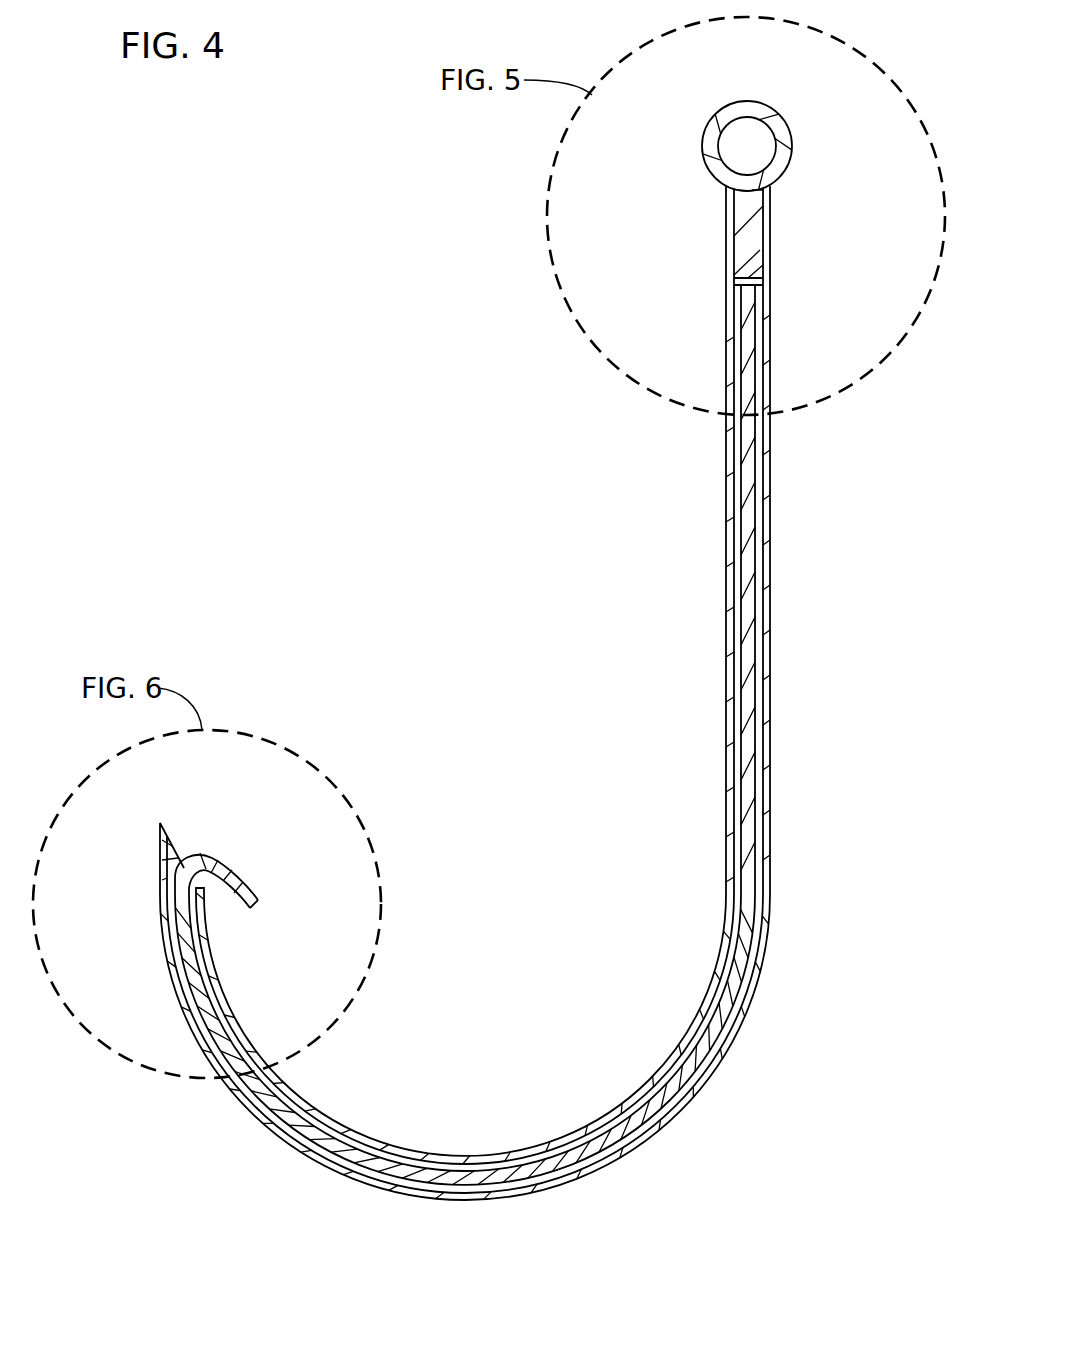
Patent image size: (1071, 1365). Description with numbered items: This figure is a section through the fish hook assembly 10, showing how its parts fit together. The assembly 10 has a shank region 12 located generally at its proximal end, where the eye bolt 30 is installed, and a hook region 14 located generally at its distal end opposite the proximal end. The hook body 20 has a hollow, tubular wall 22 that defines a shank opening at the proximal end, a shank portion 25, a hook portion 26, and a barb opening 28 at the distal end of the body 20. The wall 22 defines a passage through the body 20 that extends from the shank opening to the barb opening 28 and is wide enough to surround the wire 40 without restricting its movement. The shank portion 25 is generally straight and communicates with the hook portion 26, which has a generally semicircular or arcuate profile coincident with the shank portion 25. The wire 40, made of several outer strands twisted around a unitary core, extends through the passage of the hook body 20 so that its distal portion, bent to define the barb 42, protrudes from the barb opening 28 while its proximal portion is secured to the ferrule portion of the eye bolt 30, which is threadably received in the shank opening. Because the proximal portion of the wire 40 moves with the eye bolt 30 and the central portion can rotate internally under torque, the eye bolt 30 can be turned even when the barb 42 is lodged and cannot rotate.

The fish hook assembly 10 is at (192, 277).
The shank region 12 is at (651, 217).
The hook region 14 is at (122, 900).
The hook body 20 is at (770, 920).
The tubular wall 22 is at (772, 498).
The shank portion 25 is at (773, 352).
The hook portion 26 is at (697, 1106).
The barb opening 28 is at (182, 853).
The eye bolt 30 is at (760, 103).
The wire 40 is at (222, 866).
The barb 42 is at (254, 902).